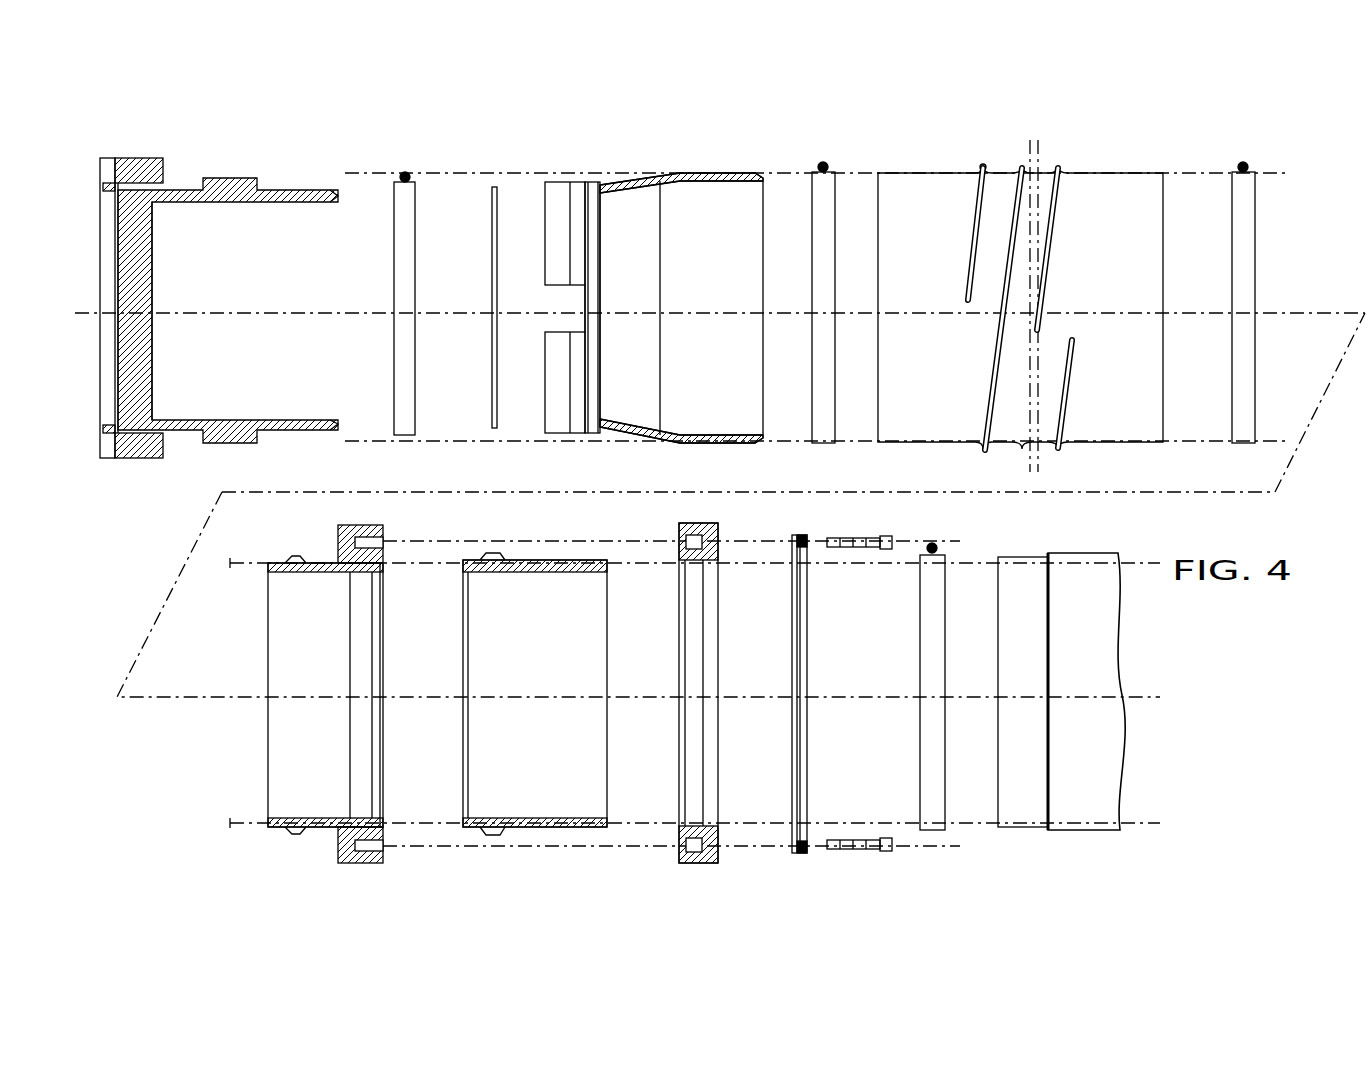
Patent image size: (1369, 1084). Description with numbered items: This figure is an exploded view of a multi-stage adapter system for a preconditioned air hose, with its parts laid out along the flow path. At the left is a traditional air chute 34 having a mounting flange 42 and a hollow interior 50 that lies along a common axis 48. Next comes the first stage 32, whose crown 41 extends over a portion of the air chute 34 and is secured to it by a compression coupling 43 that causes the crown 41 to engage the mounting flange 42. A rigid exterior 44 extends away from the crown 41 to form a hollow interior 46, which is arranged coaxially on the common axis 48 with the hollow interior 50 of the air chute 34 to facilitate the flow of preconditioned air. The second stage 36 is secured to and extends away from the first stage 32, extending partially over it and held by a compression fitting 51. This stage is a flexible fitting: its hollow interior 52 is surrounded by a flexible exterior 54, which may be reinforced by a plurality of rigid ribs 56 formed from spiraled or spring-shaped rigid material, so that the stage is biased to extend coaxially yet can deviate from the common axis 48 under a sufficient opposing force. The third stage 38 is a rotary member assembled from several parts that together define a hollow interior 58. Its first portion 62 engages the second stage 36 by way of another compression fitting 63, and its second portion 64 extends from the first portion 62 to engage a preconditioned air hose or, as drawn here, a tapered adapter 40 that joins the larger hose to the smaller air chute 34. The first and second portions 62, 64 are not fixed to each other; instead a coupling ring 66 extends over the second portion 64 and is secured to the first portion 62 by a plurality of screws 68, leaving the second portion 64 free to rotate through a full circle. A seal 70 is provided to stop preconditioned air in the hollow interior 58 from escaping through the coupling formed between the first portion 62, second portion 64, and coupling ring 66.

The first stage 32 is at (665, 126).
The air chute 34 is at (254, 150).
The second stage 36 is at (1070, 130).
The third stage 38 is at (1136, 872).
The tapered adapter 40 is at (1115, 780).
The crown 41 is at (550, 347).
The mounting flange 42 is at (300, 432).
The compression coupling 43 is at (408, 173).
The rigid exterior 44 is at (706, 182).
The hollow interior 46 is at (686, 412).
The common axis 48 is at (218, 323).
The hollow interior 50 is at (188, 392).
The compression fitting 51 is at (826, 165).
The hollow interior 52 is at (1148, 208).
The flexible exterior 54 is at (978, 167).
The rigid ribs 56 is at (1006, 186).
The hollow interior 58 is at (304, 694).
The first portion 62 is at (272, 832).
The compression fitting 63 is at (1246, 165).
The second portion 64 is at (576, 814).
The coupling ring 66 is at (690, 736).
The screws 68 is at (853, 538).
The seal 70 is at (806, 738).